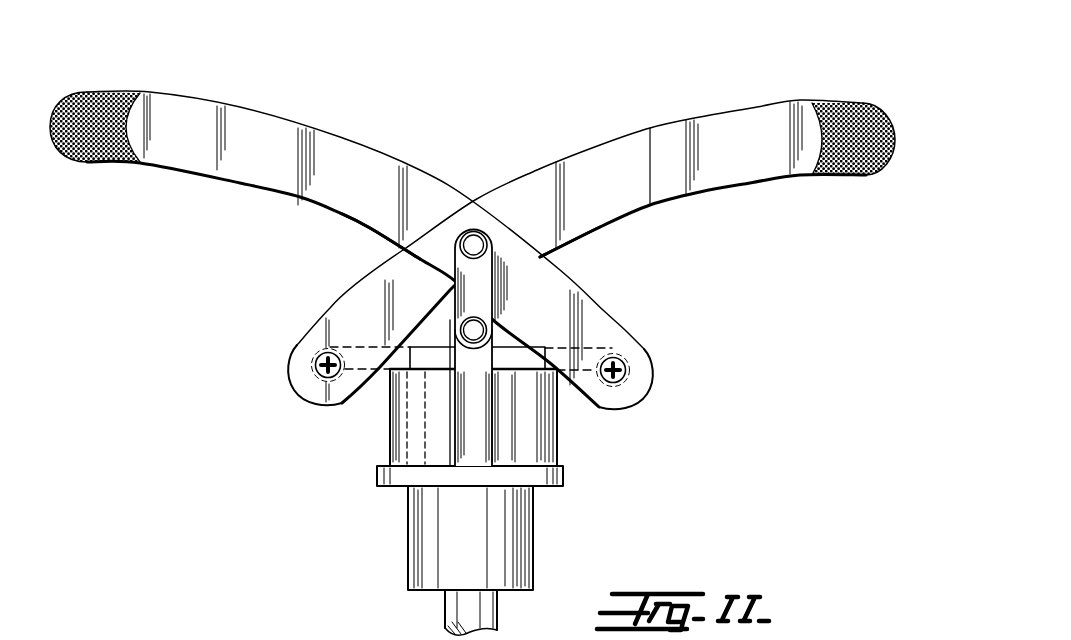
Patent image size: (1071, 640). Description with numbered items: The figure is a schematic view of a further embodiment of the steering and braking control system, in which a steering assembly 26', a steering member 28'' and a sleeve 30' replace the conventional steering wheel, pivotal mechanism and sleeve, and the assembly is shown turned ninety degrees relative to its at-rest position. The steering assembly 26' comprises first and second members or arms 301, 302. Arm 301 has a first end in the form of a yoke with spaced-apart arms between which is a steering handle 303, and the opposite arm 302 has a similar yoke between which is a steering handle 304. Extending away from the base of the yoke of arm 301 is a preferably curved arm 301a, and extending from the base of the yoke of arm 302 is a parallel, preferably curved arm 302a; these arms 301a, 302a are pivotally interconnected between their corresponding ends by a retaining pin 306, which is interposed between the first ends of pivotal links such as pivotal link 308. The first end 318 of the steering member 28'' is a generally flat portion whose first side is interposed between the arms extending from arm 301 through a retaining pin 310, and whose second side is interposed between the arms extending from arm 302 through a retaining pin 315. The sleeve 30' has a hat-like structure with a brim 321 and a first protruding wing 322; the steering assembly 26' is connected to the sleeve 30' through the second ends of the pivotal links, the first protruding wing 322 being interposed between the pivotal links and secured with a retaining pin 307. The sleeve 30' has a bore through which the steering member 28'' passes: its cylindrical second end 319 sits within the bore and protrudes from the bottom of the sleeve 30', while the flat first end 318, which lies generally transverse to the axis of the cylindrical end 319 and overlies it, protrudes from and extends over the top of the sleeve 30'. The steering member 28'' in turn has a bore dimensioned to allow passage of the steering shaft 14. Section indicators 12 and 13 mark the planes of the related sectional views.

The section line 12- 12 is at (905, 58).
The section line 13- 13 is at (105, 5).
The steering shaft 14 is at (445, 608).
The steering assembly 26' is at (447, 344).
The steering member 28'' is at (587, 545).
The sleeve 30' is at (594, 436).
The first arm 301 is at (745, 190).
The arm 301a is at (615, 222).
The second arm 302 is at (172, 172).
The arm 302a is at (360, 225).
The steering handle 303 is at (858, 180).
The steering handle 304 is at (87, 164).
The retaining pin 306 is at (477, 230).
The retaining pin 307 is at (505, 325).
The pivotal link 308 is at (454, 285).
The retaining pin 310 is at (312, 366).
The retaining pin 315 is at (632, 366).
The first end 318 is at (435, 373).
The second end 319 is at (407, 540).
The brim 321 is at (563, 478).
The first protruding wing 322 is at (452, 432).